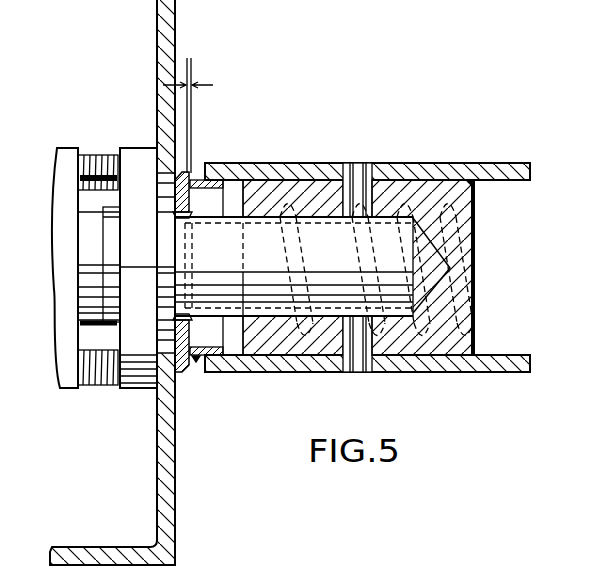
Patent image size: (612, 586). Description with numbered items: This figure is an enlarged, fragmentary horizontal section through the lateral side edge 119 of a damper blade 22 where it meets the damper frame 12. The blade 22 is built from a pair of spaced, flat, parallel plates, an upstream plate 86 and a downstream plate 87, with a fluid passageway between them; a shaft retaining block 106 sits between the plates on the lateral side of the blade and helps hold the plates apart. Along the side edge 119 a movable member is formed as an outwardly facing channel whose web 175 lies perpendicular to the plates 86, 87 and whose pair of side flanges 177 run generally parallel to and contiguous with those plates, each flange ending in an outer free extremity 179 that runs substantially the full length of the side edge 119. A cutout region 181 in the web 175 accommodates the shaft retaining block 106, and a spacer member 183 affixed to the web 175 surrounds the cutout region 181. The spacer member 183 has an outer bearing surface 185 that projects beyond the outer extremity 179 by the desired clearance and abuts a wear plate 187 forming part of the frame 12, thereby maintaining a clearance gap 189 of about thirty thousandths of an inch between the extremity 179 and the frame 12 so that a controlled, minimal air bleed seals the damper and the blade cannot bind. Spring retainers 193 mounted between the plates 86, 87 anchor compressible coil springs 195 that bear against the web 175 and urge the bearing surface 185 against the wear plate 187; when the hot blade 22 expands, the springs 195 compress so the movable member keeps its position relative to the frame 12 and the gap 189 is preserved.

The damper frame 12 is at (163, 27).
The damper blade 22 is at (433, 162).
The upstream plate 86 is at (420, 372).
The downstream plate 87 is at (337, 163).
The shaft retaining block 106 is at (476, 260).
The lateral side edge 119 is at (217, 180).
The web 175 is at (282, 187).
The side flanges 177 is at (222, 185).
The outer free extremity 179 is at (190, 176).
The cutout region 181 is at (225, 219).
The spacer member 183 is at (294, 280).
The outer bearing surface 185 is at (173, 202).
The wear plate 187 is at (173, 350).
The clearance gap 189 is at (197, 73).
The spring retainers 193 is at (471, 178).
The compressible coil springs 195 is at (402, 200).